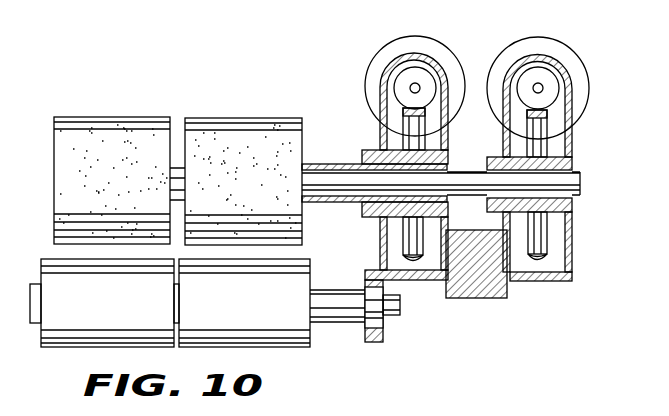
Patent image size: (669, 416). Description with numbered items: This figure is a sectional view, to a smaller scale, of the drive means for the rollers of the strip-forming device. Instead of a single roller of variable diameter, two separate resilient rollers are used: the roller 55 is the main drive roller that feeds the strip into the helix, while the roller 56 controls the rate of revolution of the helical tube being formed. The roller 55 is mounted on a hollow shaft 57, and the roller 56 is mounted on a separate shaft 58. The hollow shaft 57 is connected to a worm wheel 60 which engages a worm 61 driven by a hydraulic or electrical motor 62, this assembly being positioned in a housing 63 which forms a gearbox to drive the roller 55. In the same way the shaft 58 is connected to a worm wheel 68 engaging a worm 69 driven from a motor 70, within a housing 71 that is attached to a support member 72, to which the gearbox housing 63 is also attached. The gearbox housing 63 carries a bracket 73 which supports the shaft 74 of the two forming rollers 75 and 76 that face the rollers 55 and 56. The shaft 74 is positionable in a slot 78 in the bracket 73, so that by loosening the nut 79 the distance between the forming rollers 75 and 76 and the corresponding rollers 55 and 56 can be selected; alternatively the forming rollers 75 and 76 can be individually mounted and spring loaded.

The roller 55 is at (240, 118).
The roller 56 is at (116, 117).
The hollow shaft 57 is at (330, 163).
The shaft 58 is at (581, 196).
The worm wheel 60 is at (405, 112).
The worm 61 is at (405, 78).
The motor 62 is at (390, 42).
The housing 63 is at (421, 58).
The worm wheel 68 is at (530, 135).
The worm 69 is at (530, 80).
The motor 70 is at (555, 42).
The housing 71 is at (566, 68).
The support member 72 is at (478, 285).
The bracket 73 is at (372, 343).
The shaft 74 is at (338, 300).
The forming roller 75 is at (244, 303).
The forming roller 76 is at (104, 303).
The slot 78 is at (375, 318).
The nut 79 is at (401, 317).